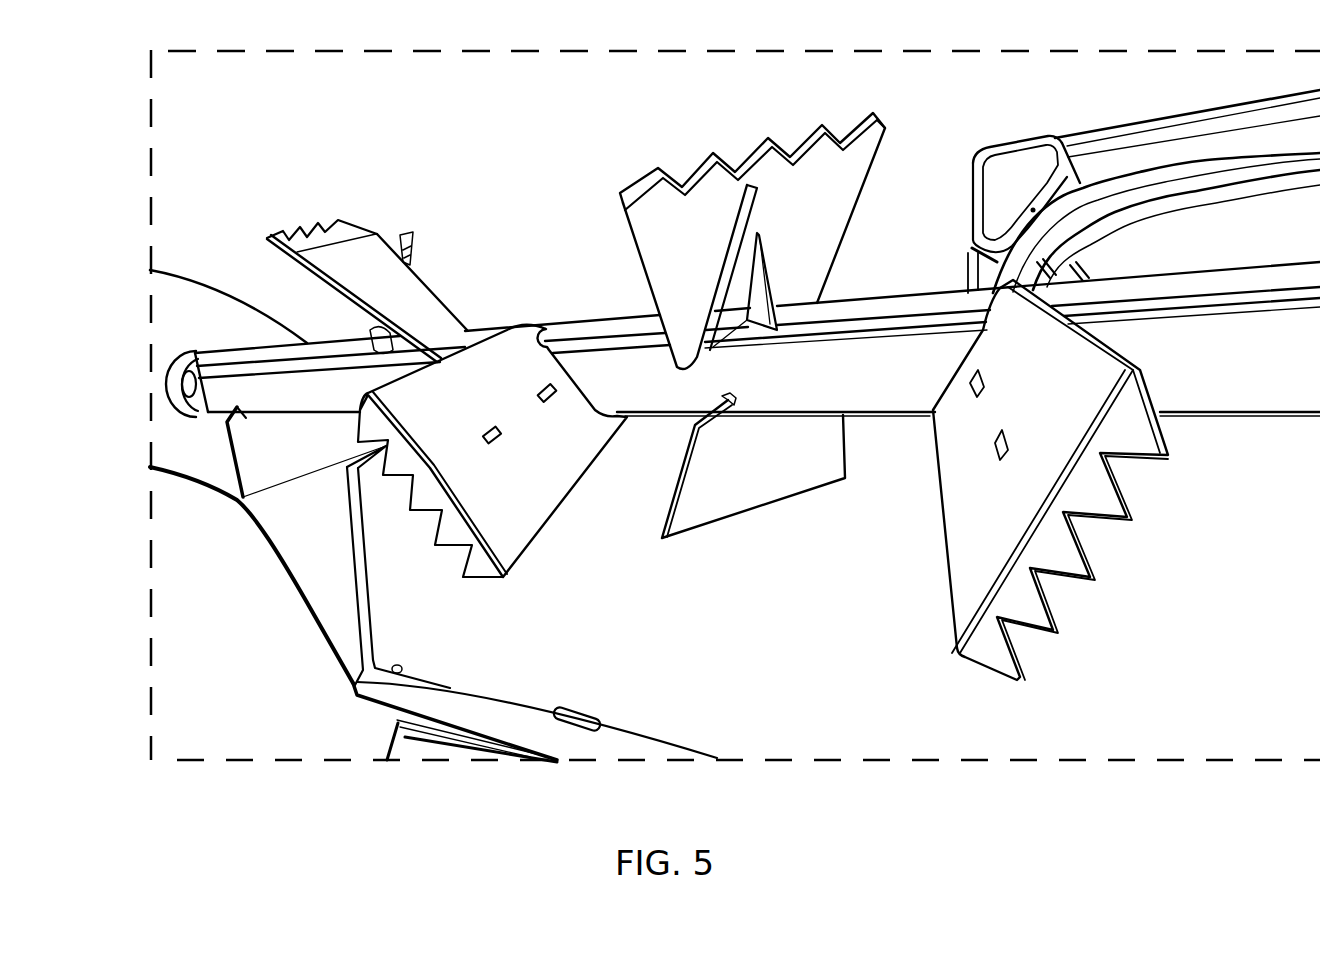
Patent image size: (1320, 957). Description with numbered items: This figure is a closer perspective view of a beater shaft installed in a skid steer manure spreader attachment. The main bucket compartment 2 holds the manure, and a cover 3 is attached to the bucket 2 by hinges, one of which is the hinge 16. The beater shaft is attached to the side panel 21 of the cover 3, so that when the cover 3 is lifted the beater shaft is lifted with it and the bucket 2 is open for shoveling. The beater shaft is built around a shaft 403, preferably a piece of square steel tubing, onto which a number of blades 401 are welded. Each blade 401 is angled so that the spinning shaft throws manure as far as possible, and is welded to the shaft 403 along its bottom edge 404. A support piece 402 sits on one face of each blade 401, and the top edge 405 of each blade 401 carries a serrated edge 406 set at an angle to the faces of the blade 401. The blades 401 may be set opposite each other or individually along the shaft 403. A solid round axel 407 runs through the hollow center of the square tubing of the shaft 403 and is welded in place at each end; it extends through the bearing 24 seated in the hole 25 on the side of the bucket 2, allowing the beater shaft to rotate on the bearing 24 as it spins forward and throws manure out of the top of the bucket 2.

The main bucket compartment 2 is at (405, 742).
The cover 3 is at (470, 660).
The hinge 16 is at (580, 727).
The side panel 21 is at (182, 450).
The bearing 24 is at (179, 372).
The hole 25 is at (174, 352).
The blade 401 is at (953, 470).
The support piece 402 is at (758, 290).
The shaft 403 is at (610, 365).
The bottom edge 404 is at (570, 373).
The top edge 405 is at (1047, 503).
The serrated edge 406 is at (668, 214).
The solid round axel 407 is at (188, 390).